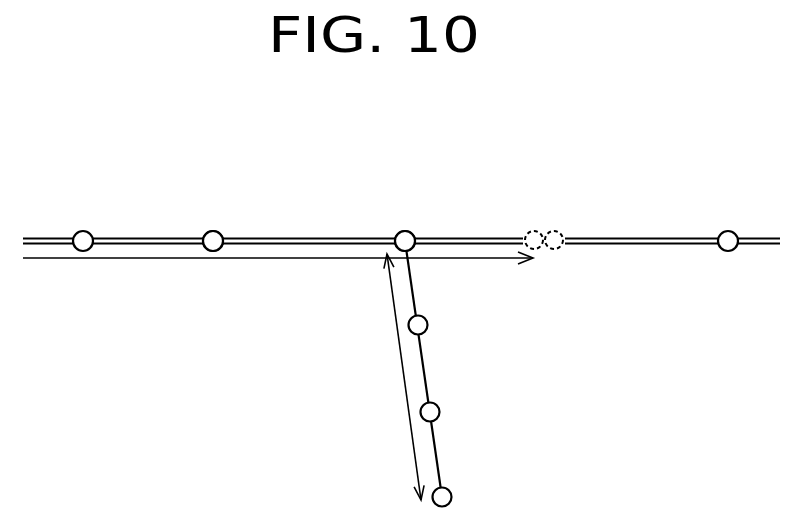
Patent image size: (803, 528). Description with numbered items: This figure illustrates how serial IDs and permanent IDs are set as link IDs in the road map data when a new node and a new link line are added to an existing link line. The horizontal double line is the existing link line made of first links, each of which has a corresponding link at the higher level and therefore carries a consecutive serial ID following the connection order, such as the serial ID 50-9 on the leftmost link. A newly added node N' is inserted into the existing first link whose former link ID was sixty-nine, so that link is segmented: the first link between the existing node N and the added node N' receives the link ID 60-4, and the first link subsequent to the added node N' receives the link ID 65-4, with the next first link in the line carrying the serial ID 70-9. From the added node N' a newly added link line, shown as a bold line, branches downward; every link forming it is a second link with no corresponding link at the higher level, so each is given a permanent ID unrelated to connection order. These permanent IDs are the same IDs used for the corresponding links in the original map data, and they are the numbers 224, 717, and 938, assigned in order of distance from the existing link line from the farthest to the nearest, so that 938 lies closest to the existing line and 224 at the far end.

The existing node N is at (210, 195).
The added node N' is at (404, 195).
The serial ID of first link 50-9 is at (112, 231).
The serial ID of first link 60-4 is at (242, 231).
The serial ID of first link 65-4 is at (433, 232).
The serial ID of first link 70-9 is at (572, 231).
The permanent ID of second link 938 is at (441, 315).
The permanent ID of second link 717 is at (455, 401).
The permanent ID of second link 224 is at (467, 487).